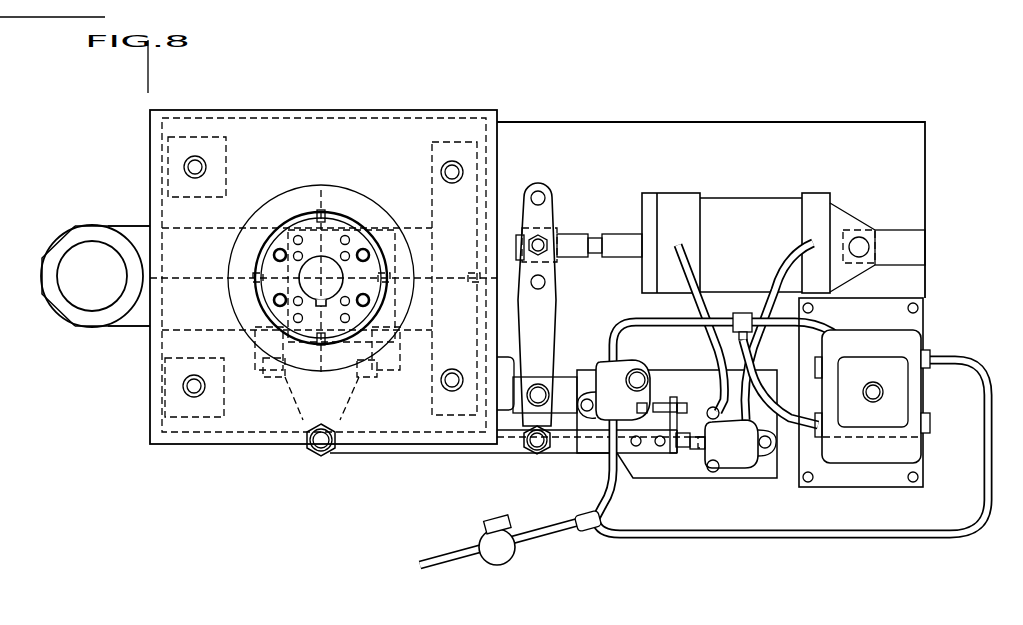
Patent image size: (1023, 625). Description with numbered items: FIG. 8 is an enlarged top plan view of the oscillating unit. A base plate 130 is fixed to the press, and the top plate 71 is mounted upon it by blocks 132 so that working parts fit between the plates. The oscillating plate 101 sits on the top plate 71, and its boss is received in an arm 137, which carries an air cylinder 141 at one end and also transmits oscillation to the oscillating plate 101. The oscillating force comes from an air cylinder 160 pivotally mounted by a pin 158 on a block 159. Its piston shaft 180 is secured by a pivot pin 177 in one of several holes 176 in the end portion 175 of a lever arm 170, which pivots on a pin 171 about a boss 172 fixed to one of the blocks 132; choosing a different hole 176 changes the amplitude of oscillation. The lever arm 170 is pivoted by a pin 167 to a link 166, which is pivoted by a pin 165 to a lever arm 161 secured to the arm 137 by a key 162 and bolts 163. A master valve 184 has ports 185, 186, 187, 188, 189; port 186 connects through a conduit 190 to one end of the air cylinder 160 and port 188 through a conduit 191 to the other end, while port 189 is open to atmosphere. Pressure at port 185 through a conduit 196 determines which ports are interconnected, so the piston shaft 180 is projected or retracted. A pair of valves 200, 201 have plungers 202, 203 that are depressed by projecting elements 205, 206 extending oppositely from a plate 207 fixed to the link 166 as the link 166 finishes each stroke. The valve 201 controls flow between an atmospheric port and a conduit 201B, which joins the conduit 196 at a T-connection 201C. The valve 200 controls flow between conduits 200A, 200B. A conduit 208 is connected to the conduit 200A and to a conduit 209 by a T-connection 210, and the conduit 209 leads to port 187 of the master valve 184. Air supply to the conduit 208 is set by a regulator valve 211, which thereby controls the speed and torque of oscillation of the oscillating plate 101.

The top plate 71 is at (345, 125).
The oscillating plate 101 is at (366, 210).
The base plate 130 is at (808, 122).
The blocks 132 is at (226, 150).
The arm 137 is at (130, 326).
The air cylinder 141 is at (108, 286).
The pin 158 is at (860, 255).
The block 159 is at (910, 254).
The air cylinder 160 is at (762, 228).
The lever arm 161 is at (297, 403).
The key 162 is at (350, 385).
The bolts 163 is at (263, 372).
The pin 165 is at (322, 448).
The link 166 is at (510, 453).
The pin 167 is at (537, 454).
The lever arm 170 is at (552, 339).
The pin 171 is at (546, 372).
The boss 172 is at (500, 358).
The end portion 175 is at (554, 213).
The holes 176 is at (541, 192).
The pivot pin 177 is at (546, 243).
The piston shaft 180 is at (618, 234).
The master valve 184 is at (915, 400).
The port 185 is at (883, 380).
The port 186 is at (869, 394).
The port 187 is at (930, 352).
The port 188 is at (820, 440).
The port 189 is at (930, 433).
The conduit 190 is at (770, 272).
The conduit 191 is at (692, 312).
The conduit 196 is at (812, 326).
The valve 200 is at (633, 400).
The conduit 200A is at (611, 494).
The conduit 200B is at (618, 335).
The valve 201 is at (744, 456).
The conduit 201B is at (742, 366).
The T-connection 201C is at (758, 300).
The plunger 202 is at (638, 370).
The plunger 203 is at (700, 478).
The projecting element 205 is at (660, 400).
The projecting element 206 is at (690, 450).
The plate 207 is at (720, 402).
The conduit 208 is at (543, 540).
The conduit 209 is at (765, 539).
The T-connection 210 is at (578, 518).
The regulator valve 211 is at (490, 556).